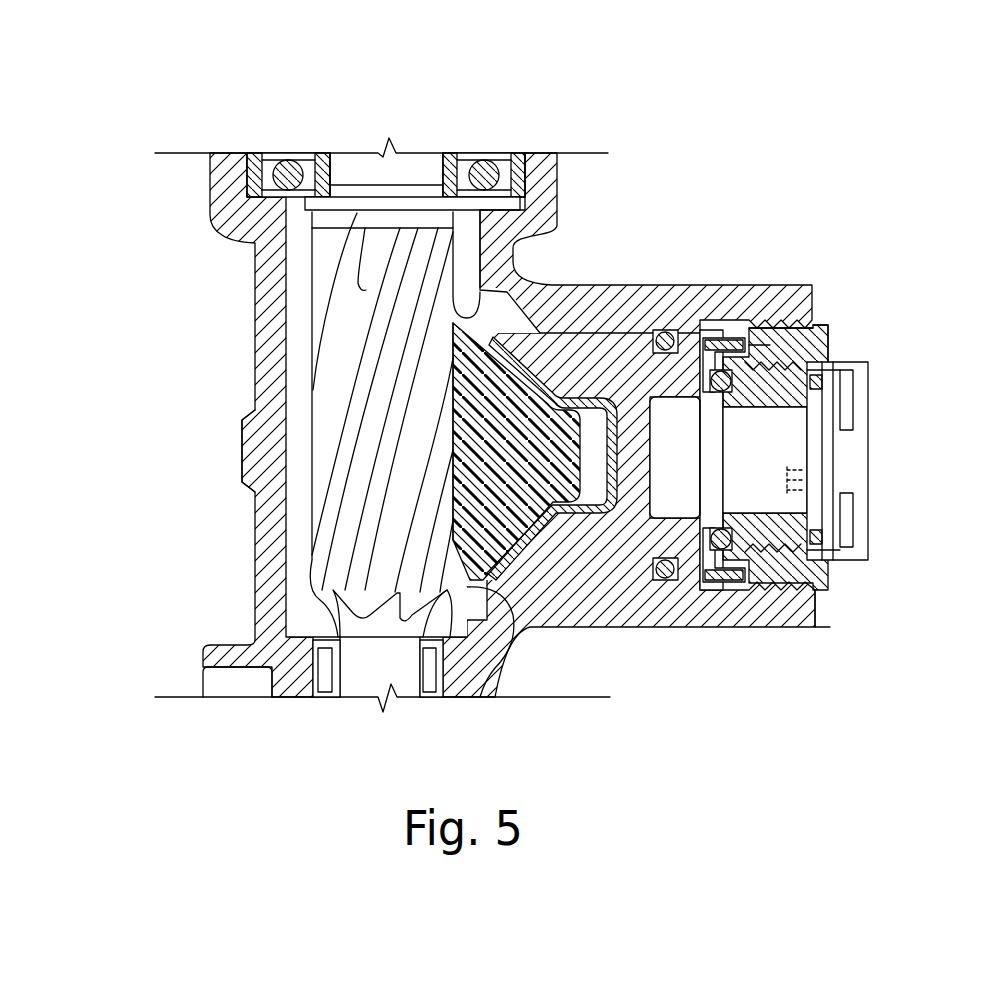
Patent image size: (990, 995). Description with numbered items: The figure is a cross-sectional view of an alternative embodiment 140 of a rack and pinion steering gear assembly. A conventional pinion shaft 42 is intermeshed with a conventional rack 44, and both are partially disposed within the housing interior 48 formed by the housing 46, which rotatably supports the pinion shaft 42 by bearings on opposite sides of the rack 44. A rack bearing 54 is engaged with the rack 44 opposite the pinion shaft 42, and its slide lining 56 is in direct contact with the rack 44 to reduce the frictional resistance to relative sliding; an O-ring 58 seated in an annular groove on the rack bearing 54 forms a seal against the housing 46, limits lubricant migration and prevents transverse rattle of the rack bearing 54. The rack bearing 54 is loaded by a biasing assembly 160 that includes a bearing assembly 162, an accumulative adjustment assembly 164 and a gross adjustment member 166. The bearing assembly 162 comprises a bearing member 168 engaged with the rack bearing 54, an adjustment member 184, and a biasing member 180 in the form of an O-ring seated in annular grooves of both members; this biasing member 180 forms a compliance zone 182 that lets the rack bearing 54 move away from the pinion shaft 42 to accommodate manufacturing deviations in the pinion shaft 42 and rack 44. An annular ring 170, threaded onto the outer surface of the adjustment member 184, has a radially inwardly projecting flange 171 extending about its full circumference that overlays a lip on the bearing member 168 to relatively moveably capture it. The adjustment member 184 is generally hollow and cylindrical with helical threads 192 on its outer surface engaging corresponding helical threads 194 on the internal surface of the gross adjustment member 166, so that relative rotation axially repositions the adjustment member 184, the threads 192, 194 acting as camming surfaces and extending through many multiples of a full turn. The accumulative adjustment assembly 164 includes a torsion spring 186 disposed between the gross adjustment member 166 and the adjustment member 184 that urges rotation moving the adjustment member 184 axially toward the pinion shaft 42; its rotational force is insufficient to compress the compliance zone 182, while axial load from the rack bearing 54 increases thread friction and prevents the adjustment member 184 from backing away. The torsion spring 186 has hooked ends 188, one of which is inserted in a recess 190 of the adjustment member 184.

The alternative embodiment of rack and pinion steering gear assembly 140 is at (317, 102).
The pinion shaft 42 is at (340, 357).
The rack 44 is at (467, 560).
The housing 46 is at (245, 453).
The housing interior 48 is at (300, 512).
The rack bearing 54 is at (633, 343).
The slide lining 56 is at (492, 337).
The O-ring seals 58 is at (662, 583).
The biasing assembly 160 is at (870, 620).
The bearing assembly 162 is at (690, 420).
The accumulative adjustment assembly 164 is at (860, 410).
The gross adjustment member 166 is at (820, 342).
The bearing member 168 is at (705, 482).
The annular ring 170 is at (740, 595).
The radially inwardly projecting flange 171 is at (712, 585).
The biasing member 180 is at (748, 590).
The compliance zone 182 is at (716, 410).
The adjustment member 184 is at (722, 345).
The biasing member (torsion spring) 186 is at (860, 512).
The hooked ends 188 is at (784, 478).
The recess 190 is at (797, 467).
The helical threads 192 is at (820, 320).
The helical threads 194 is at (778, 330).